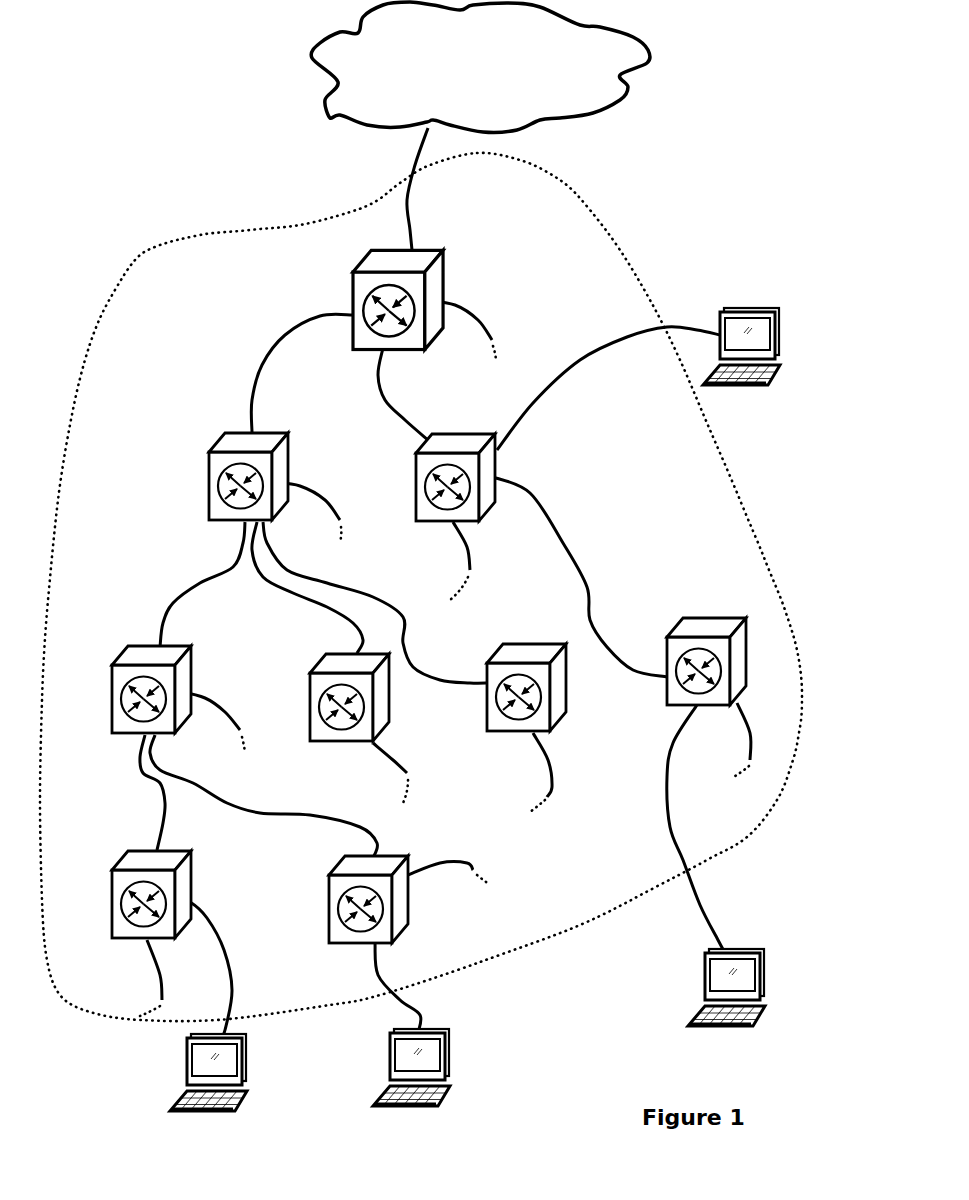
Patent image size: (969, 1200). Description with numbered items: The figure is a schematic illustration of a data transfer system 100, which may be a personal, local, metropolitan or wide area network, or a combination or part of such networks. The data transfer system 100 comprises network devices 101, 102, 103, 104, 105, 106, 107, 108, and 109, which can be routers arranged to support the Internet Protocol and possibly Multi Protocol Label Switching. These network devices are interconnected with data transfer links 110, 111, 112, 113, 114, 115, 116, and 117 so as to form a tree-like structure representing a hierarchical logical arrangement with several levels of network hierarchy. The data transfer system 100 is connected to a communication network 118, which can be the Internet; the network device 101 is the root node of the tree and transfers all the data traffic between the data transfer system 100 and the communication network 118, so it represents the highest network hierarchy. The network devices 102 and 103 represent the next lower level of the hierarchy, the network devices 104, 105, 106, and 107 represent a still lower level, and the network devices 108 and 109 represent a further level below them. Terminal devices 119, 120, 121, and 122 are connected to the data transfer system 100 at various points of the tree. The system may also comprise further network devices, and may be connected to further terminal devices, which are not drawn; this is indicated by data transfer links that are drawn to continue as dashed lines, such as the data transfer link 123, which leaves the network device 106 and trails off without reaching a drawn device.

The data transfer system 100 is at (580, 258).
The network device 101 is at (353, 289).
The network device 102 is at (220, 523).
The network device 103 is at (428, 525).
The network device 104 is at (122, 735).
The network device 105 is at (317, 745).
The network device 106 is at (518, 733).
The network device 107 is at (690, 617).
The network device 108 is at (127, 940).
The network device 109 is at (336, 945).
The data transfer link 110 is at (257, 375).
The data transfer link 111 is at (380, 385).
The data transfer link 112 is at (163, 620).
The data transfer link 113 is at (292, 597).
The data transfer link 114 is at (422, 653).
The data transfer link 115 is at (558, 522).
The data transfer link 116 is at (160, 822).
The data transfer link 117 is at (250, 812).
The communication network 118 is at (487, 64).
The terminal device 119 is at (750, 313).
The terminal device 120 is at (705, 980).
The terminal device 121 is at (452, 1048).
The terminal device 122 is at (250, 1052).
The data transfer link 123 is at (553, 773).